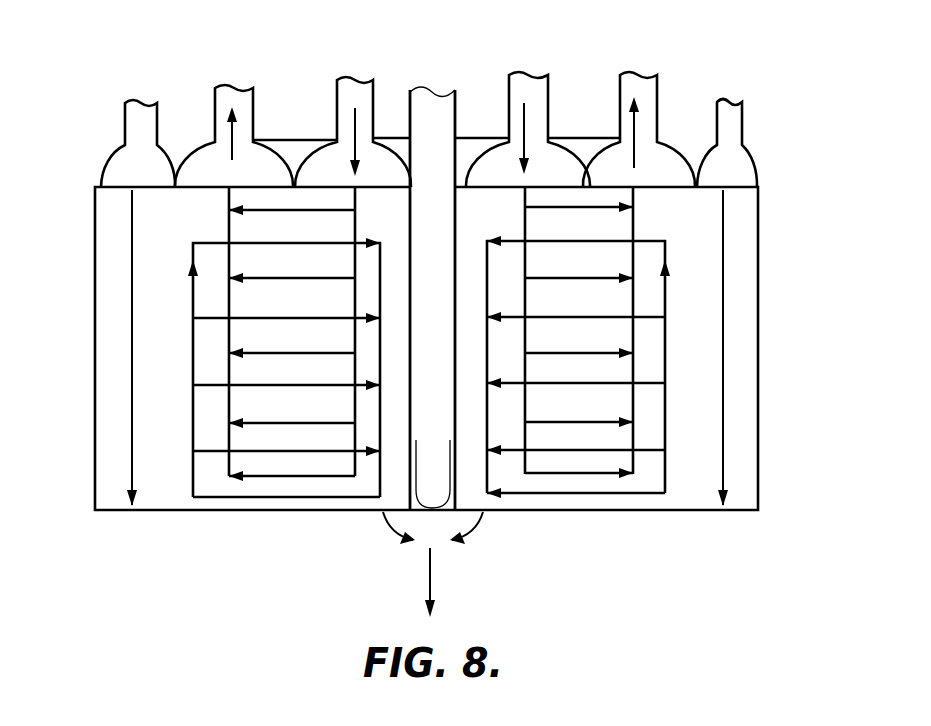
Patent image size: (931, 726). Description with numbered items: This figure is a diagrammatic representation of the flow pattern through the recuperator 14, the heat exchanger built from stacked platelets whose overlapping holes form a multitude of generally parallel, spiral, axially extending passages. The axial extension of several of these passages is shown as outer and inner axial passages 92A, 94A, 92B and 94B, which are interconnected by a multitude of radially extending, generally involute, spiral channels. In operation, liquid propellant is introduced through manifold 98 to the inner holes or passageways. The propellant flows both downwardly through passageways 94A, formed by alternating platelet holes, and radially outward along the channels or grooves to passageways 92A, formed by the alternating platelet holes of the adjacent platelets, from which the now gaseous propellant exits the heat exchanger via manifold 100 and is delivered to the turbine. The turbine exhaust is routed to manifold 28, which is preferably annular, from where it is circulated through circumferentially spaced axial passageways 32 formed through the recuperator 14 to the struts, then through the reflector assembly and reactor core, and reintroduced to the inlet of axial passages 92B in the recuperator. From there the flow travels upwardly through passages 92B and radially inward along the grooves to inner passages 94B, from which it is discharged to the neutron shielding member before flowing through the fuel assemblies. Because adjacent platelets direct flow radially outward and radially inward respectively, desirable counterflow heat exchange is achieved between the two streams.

The recuperator 14 is at (770, 224).
The manifold 28 is at (742, 125).
The axial passageway 32 is at (132, 368).
The outer axial passage 92A is at (229, 227).
The outer axial passage 92B is at (190, 478).
The inner axial passage 94A is at (356, 222).
The inner axial passage 94B is at (380, 478).
The manifold 98 is at (335, 113).
The manifold 100 is at (205, 130).